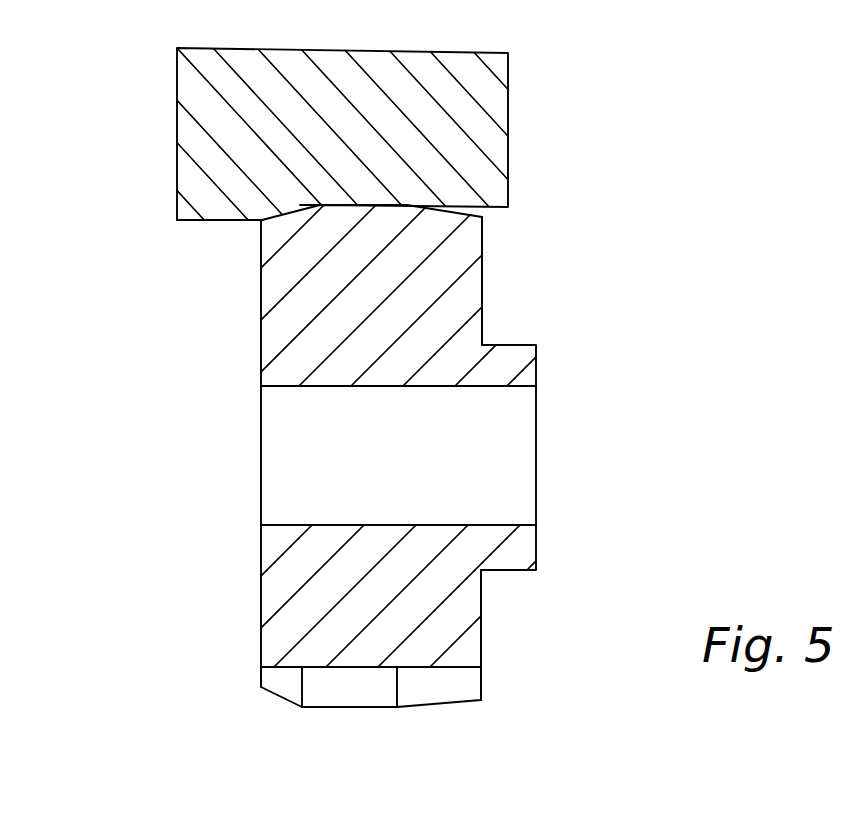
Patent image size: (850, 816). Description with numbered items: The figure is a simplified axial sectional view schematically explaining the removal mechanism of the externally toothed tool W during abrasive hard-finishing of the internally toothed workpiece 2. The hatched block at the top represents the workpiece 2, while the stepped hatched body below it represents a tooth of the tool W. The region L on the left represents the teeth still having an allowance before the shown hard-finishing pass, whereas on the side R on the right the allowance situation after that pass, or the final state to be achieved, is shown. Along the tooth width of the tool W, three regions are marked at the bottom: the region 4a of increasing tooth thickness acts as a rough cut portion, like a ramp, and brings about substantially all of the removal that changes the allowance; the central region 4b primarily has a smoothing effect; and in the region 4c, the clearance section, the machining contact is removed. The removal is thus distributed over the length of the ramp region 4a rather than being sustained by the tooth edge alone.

The workpiece 2 is at (525, 148).
The rough cut portion 4a is at (274, 710).
The central region 4b is at (349, 710).
The clearance section 4c is at (439, 709).
The right side R is at (507, 227).
The left region L is at (140, 313).
The tool W is at (492, 617).